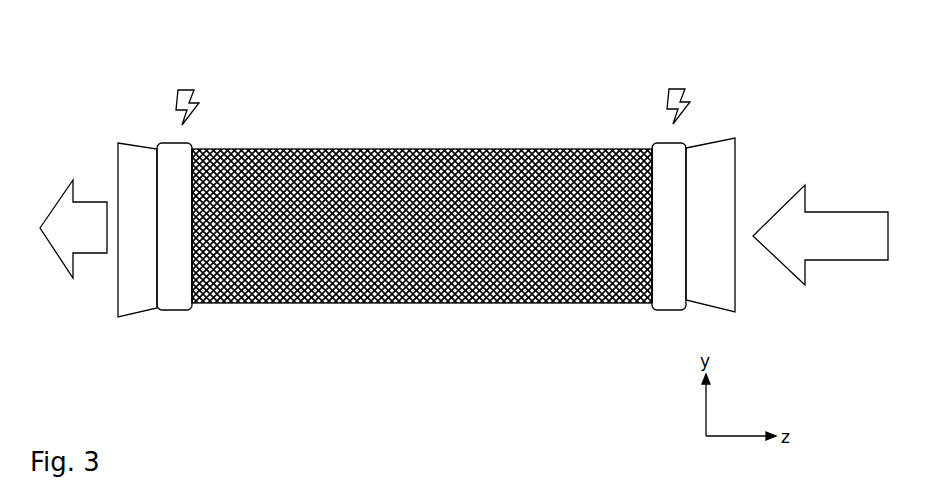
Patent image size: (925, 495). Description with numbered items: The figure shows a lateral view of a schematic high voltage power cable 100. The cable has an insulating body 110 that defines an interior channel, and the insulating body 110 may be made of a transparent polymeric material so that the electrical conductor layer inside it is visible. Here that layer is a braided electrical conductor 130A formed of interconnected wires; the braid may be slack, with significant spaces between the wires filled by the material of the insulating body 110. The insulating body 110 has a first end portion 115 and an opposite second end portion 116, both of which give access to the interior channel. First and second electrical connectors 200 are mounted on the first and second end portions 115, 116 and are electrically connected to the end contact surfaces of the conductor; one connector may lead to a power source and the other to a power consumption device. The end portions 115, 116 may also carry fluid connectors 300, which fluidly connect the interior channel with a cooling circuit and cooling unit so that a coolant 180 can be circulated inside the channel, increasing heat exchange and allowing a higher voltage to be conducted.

The power cable 100 is at (401, 100).
The insulating body 110 is at (511, 150).
The first end portion 115 is at (181, 300).
The second end portion 116 is at (668, 298).
The braided electrical conductor 130A is at (520, 303).
The coolant 180 is at (464, 232).
The electrical connectors 200 is at (173, 158).
The fluid connectors 300 is at (134, 160).